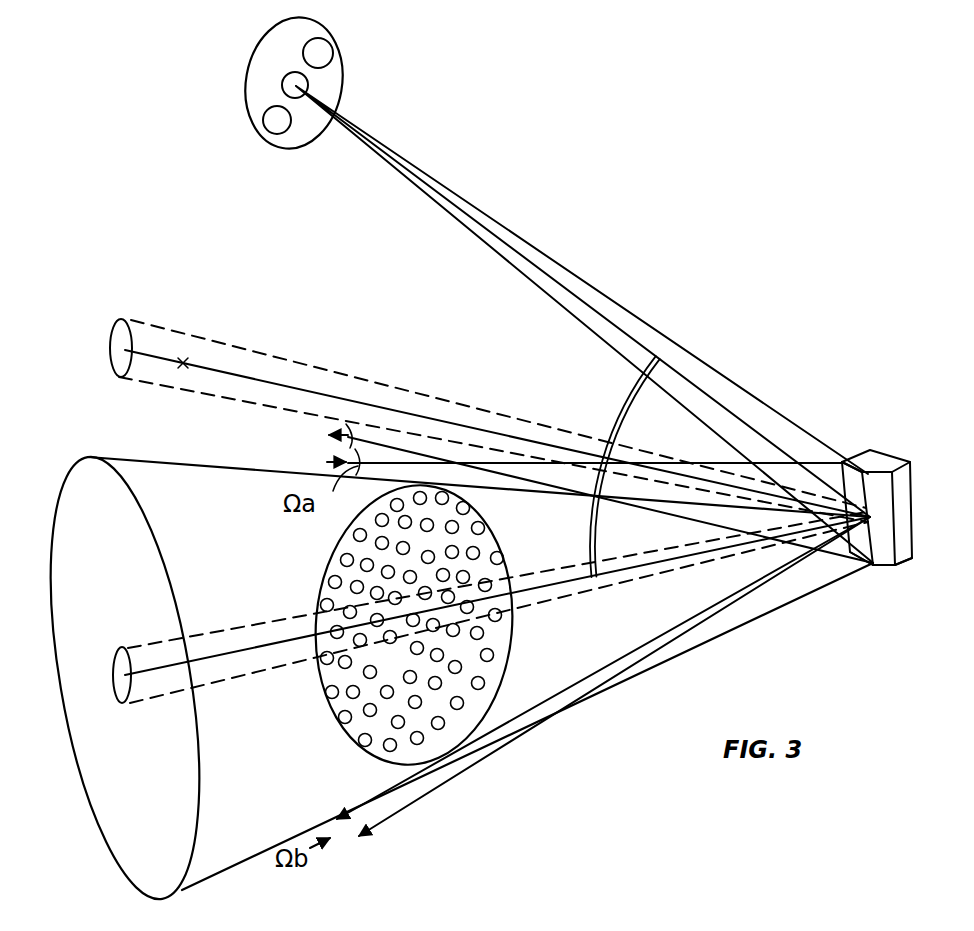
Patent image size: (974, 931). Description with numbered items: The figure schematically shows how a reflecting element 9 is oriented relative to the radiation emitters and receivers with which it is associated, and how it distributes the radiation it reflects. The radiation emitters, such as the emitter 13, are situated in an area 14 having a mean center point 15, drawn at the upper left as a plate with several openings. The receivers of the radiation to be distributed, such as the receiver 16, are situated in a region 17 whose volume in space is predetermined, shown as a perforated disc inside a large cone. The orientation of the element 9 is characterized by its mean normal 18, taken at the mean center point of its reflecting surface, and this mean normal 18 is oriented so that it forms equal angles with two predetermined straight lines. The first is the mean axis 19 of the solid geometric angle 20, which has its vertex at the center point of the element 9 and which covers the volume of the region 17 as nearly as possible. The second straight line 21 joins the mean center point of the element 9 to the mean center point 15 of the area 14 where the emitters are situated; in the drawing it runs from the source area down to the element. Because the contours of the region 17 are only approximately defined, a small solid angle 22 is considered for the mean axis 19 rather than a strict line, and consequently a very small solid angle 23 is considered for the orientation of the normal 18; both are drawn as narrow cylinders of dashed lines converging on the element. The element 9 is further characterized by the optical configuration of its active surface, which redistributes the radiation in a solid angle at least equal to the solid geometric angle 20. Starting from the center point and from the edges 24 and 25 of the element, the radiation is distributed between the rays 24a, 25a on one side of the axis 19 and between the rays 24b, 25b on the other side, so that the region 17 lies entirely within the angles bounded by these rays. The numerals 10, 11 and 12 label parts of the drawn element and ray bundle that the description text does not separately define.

The reflecting element 9 is at (905, 482).
The detector 10 is at (887, 560).
The rays from source 11 is at (584, 324).
The pinhole aperture 12 is at (880, 518).
The radiation emitter 13 is at (281, 128).
The area 14 is at (342, 63).
The mean center point 15 is at (283, 78).
The receiver 16 is at (339, 552).
The region 17 is at (347, 676).
The mean normal 18 is at (500, 435).
The mean axis 19 is at (533, 598).
The solid geometric angle 20 is at (208, 482).
The straight line 21 is at (577, 300).
The small solid angle 22 is at (249, 630).
The very small solid angle 23 is at (292, 368).
The edge 24 is at (862, 460).
The edge 25 is at (873, 566).
The ray 24a is at (555, 460).
The ray 25a is at (570, 491).
The ray 24b is at (365, 826).
The ray 25b is at (357, 812).